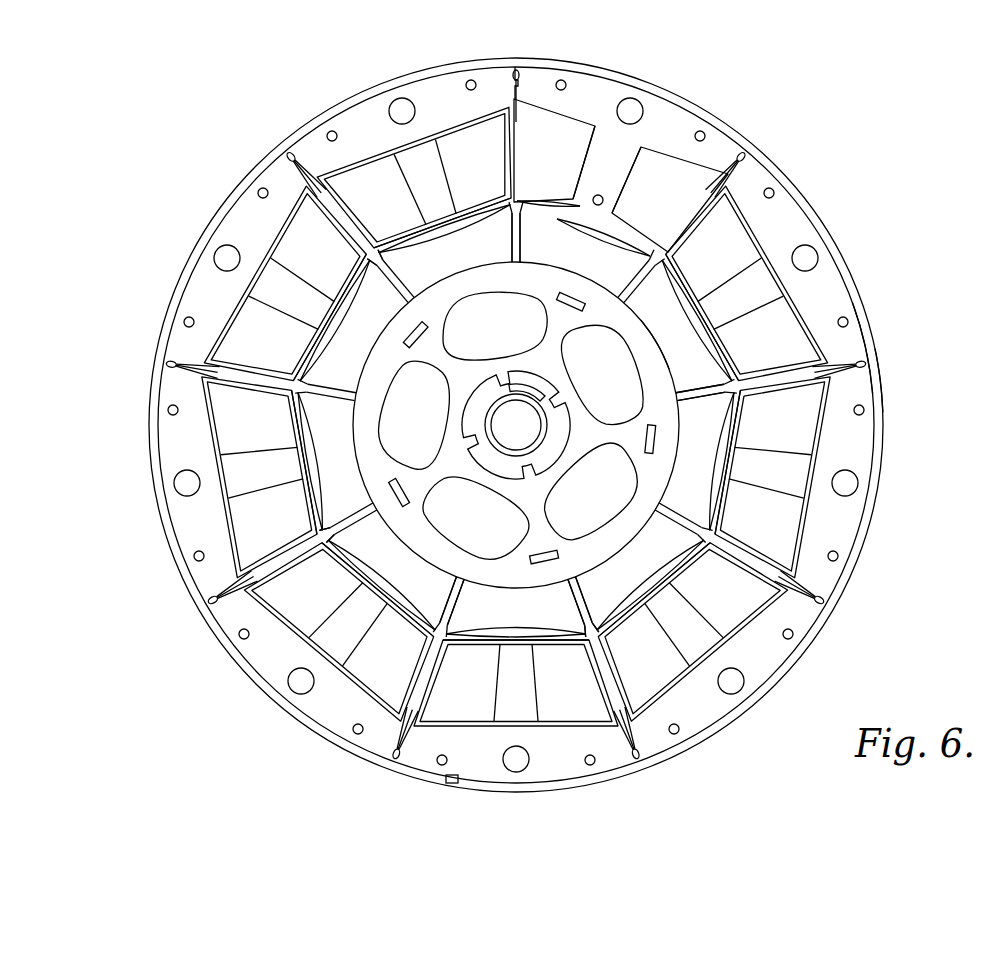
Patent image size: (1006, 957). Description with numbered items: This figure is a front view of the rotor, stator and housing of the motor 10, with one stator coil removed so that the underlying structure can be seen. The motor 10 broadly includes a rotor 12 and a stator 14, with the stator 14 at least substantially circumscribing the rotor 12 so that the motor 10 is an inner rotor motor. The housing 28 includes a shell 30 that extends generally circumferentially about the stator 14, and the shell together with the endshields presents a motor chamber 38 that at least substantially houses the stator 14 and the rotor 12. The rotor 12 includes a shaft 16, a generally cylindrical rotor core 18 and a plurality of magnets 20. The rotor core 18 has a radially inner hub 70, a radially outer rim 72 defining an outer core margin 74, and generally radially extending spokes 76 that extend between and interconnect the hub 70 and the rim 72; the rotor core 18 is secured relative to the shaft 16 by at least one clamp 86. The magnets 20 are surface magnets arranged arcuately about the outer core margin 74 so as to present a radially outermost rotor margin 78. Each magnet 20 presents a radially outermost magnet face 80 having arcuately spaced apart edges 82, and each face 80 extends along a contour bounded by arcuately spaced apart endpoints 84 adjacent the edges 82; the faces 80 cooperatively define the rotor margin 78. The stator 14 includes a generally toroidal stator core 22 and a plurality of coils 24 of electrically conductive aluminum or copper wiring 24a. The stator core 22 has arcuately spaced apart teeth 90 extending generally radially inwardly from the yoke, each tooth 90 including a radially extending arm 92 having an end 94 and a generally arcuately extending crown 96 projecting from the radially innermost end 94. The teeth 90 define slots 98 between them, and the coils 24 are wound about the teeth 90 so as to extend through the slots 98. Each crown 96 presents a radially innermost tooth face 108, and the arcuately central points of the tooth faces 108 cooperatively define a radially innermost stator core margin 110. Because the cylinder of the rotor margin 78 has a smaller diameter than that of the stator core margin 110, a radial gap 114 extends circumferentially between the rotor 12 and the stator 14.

The motor 10 is at (900, 103).
The rotor 12 is at (698, 380).
The stator 14 is at (798, 226).
The shaft 16 is at (517, 432).
The rotor core 18 is at (678, 440).
The magnets 20 is at (391, 283).
The stator core 22 is at (596, 84).
The coils 24 is at (258, 337).
The wiring 24a is at (313, 212).
The housing 28 is at (848, 262).
The shell 30 is at (879, 318).
The motor chamber 38 is at (873, 350).
The radially inner hub 70 is at (557, 380).
The radially outer rim 72 is at (645, 350).
The outer core margin 74 is at (700, 503).
The spokes 76 is at (557, 328).
The radially outermost rotor margin 78 is at (300, 522).
The radially outermost magnet face 80 is at (313, 487).
The magnet edges 82 is at (470, 232).
The endpoints 84 is at (470, 243).
The clamp 86 is at (477, 393).
The teeth 90 is at (625, 148).
The arm 92 is at (603, 157).
The end 94 is at (614, 214).
The crown 96 is at (563, 210).
The slots 98 is at (573, 146).
The radially innermost tooth face 108 is at (483, 234).
The radially innermost stator core margin 110 is at (330, 313).
The radial gap 114 is at (362, 276).